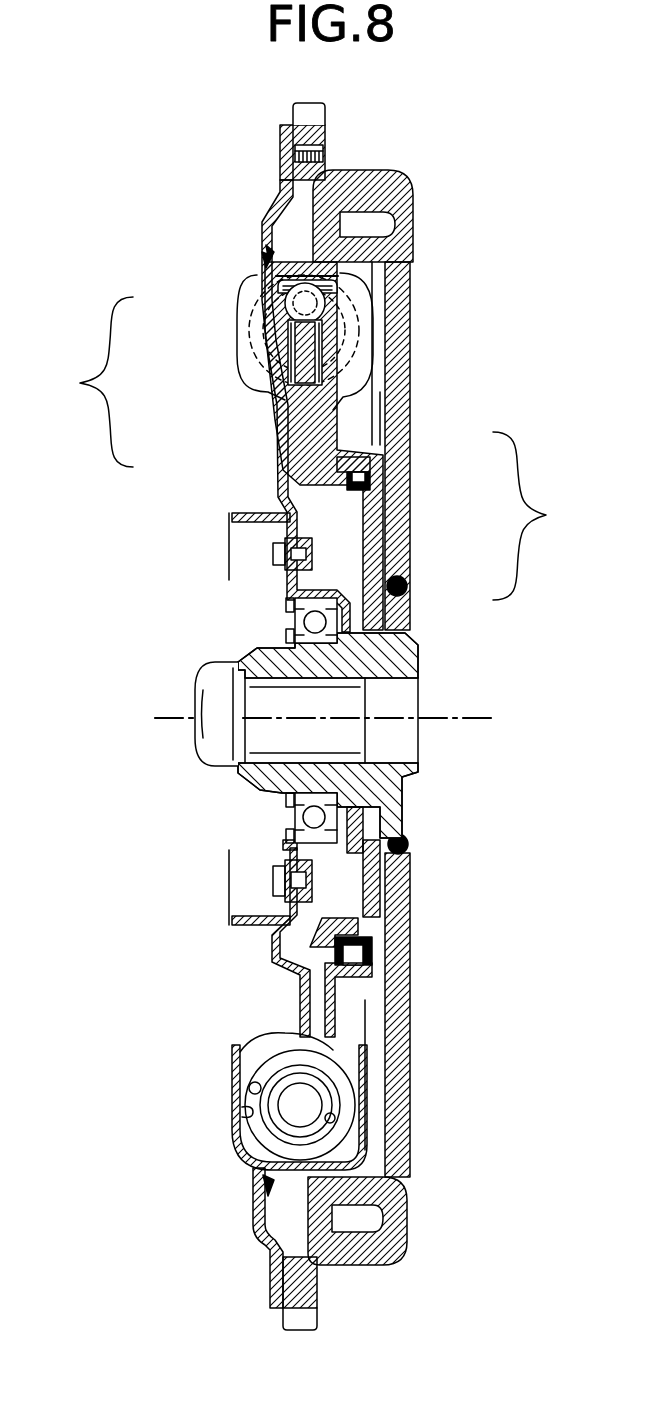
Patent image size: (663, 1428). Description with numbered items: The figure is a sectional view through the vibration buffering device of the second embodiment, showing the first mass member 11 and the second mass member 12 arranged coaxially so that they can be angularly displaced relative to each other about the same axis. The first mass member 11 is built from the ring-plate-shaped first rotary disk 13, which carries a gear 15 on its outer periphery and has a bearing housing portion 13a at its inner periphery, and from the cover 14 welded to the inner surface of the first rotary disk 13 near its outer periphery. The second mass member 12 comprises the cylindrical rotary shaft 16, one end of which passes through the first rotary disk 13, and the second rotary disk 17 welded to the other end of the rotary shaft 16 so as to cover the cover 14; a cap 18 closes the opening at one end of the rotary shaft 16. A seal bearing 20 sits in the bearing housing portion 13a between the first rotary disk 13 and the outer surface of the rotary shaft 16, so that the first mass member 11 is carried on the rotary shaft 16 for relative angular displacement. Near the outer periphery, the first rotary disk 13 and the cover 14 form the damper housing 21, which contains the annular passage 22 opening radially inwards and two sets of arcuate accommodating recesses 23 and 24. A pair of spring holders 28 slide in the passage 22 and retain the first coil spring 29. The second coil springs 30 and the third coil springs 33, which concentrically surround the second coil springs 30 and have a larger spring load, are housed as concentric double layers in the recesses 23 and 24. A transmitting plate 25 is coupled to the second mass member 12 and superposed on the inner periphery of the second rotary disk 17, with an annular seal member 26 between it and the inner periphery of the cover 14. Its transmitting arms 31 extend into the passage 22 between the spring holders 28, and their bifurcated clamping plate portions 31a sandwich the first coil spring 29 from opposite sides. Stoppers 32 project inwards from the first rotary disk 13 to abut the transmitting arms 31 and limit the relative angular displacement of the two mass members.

The first mass member 11 is at (87, 382).
The second mass member 12 is at (544, 516).
The first rotary disk 13 is at (277, 467).
The bearing housing portion 13a is at (368, 850).
The cover 14 is at (273, 403).
The gear 15 is at (318, 115).
The rotary shaft 16 is at (383, 647).
The second rotary disk 17 is at (392, 452).
The cap 18 is at (193, 690).
The seal bearing 20 is at (290, 840).
The damper housing 21 is at (253, 330).
The annular passage 22 is at (328, 337).
The accommodating recess 23 is at (250, 1132).
The accommodating recess 24 is at (370, 1140).
The transmitting plate 25 is at (372, 898).
The annular seal member 26 is at (350, 950).
The spring holder 28 is at (263, 267).
The first coil spring 29 is at (335, 298).
The second coil spring 30 is at (305, 1080).
The transmitting arm 31 is at (307, 430).
The clamping plate portion 31a is at (383, 213).
The stopper 32 is at (360, 1048).
The third coil spring 33 is at (298, 1070).